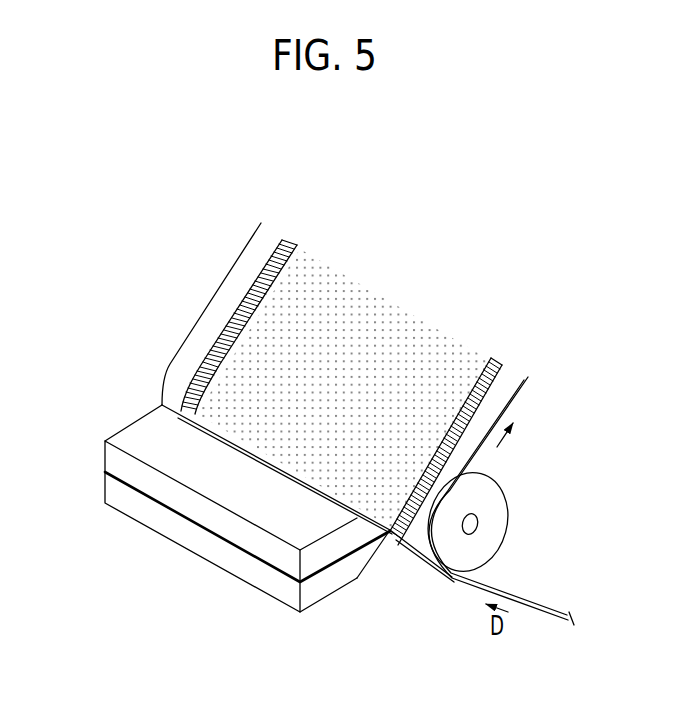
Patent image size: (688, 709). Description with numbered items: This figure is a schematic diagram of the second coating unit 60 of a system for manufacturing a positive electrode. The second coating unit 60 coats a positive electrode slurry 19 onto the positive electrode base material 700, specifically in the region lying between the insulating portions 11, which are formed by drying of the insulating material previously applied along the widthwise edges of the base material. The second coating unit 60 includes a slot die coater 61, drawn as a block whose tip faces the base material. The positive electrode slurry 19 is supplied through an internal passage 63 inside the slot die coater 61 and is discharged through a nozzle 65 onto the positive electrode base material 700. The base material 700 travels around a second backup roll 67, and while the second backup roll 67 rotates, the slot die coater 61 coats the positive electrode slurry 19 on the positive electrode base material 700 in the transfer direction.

The insulating portions 11 is at (285, 239).
The positive electrode slurry 19 is at (388, 312).
The second coating unit 60 is at (504, 211).
The slot die coater 61 is at (105, 422).
The internal passage 63 is at (300, 581).
The nozzle 65 is at (405, 537).
The second backup roll 67 is at (500, 518).
The positive electrode base material 700 is at (510, 374).